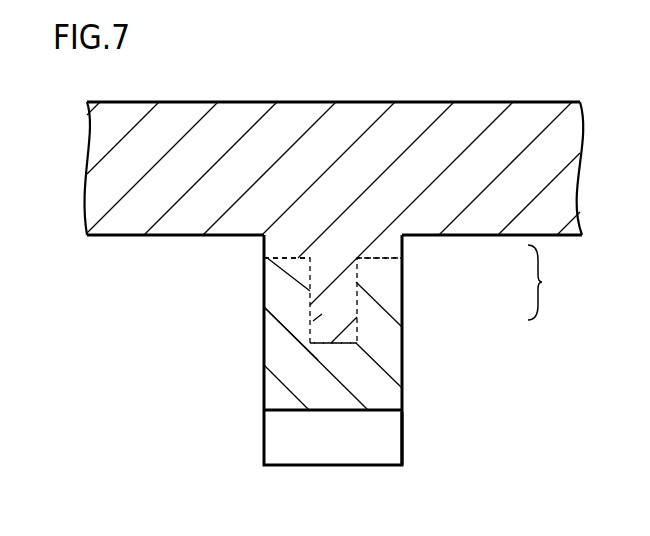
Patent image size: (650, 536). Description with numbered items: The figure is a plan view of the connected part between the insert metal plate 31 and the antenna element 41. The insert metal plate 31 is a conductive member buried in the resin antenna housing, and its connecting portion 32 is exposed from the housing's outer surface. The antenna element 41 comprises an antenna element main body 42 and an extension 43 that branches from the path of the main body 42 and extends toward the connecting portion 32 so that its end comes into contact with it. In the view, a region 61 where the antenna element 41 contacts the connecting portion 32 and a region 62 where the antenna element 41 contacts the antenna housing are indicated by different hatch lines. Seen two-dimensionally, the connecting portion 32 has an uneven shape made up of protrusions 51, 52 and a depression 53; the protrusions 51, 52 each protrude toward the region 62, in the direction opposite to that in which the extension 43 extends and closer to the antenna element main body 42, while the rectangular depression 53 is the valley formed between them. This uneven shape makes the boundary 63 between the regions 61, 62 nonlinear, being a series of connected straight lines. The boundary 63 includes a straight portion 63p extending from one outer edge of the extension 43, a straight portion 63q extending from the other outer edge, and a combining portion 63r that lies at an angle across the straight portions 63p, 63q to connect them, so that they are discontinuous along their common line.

The insert metal plate 31 is at (403, 446).
The connecting portion 32 is at (332, 466).
The antenna element 41 is at (550, 282).
The antenna element main body 42 is at (462, 217).
The extension 43 is at (375, 378).
The protrusion 51 is at (308, 329).
The protrusion 52 is at (382, 297).
The depression 53 is at (322, 304).
The region 61 is at (285, 396).
The region 62 is at (333, 228).
The boundary 63 is at (290, 258).
The straight portion 63p is at (268, 257).
The straight portion 63q is at (405, 258).
The combining portion 63r is at (306, 336).